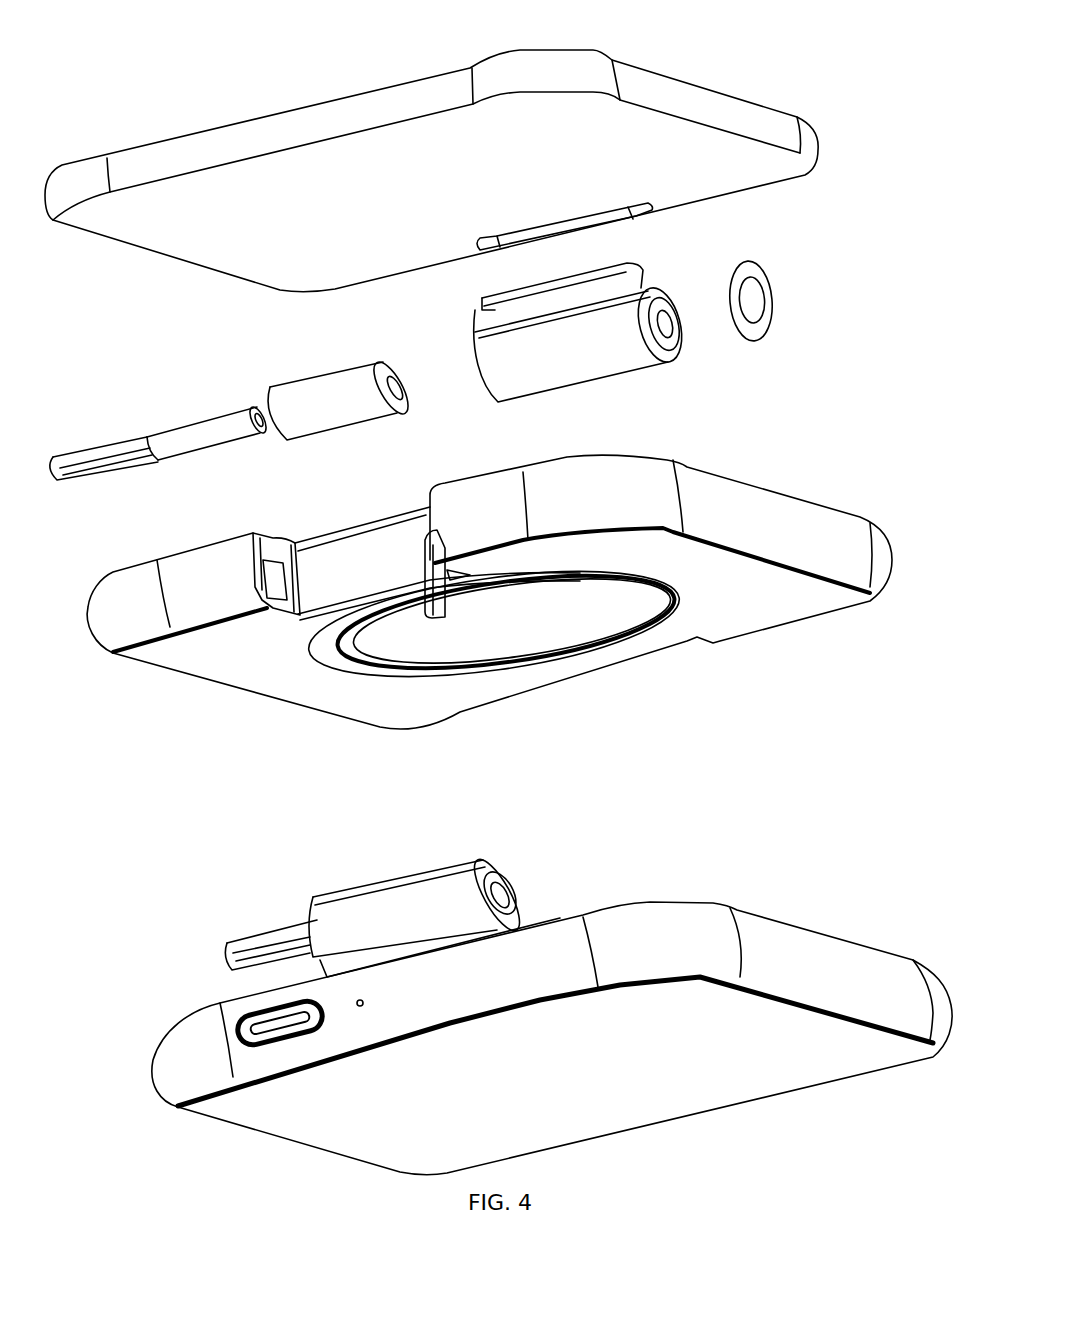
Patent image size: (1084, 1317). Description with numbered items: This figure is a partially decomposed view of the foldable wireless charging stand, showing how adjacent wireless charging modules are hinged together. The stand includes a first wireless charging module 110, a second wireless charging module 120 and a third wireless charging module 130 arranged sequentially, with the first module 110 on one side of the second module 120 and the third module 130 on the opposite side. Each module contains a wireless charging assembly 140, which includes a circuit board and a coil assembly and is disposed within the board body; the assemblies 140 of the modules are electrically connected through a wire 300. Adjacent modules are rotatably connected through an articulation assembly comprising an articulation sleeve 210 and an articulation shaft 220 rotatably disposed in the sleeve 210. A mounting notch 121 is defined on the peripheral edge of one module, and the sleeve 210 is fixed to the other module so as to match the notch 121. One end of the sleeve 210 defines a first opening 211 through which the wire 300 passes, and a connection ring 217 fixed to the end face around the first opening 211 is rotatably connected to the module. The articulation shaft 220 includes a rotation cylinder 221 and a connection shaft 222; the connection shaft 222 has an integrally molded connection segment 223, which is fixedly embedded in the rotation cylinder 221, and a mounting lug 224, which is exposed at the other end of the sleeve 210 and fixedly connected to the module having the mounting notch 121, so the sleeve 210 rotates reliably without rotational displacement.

The first wireless charging module 110 is at (665, 927).
The second wireless charging module 120 is at (730, 603).
The mounting notch 121 is at (315, 550).
The third wireless charging module 130 is at (358, 98).
The wireless charging assembly 140 is at (562, 620).
The articulation sleeve 210 is at (577, 333).
The first opening 211 is at (680, 325).
The connection ring 217 is at (655, 285).
The articulation shaft 220 is at (260, 629).
The rotation cylinder 221 is at (333, 400).
The connection shaft 222 is at (183, 636).
The connection segment 223 is at (210, 430).
The mounting lug 224 is at (183, 670).
The wire 300 is at (417, 550).